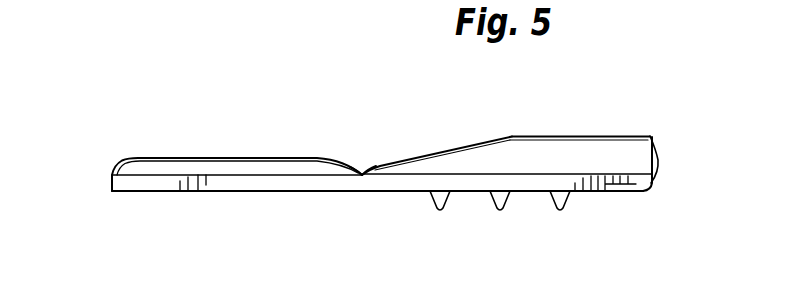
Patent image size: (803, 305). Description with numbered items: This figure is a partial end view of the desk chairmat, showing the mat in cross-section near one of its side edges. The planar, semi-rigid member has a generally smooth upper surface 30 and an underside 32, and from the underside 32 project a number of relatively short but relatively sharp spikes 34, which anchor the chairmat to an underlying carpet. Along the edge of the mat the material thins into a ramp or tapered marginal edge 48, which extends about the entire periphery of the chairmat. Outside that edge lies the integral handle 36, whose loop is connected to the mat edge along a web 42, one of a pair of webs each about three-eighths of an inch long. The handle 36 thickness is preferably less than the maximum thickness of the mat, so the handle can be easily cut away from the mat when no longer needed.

The upper surface 30 is at (577, 137).
The underside 32 is at (610, 192).
The spikes 34 is at (497, 201).
The handle 36 is at (169, 152).
The web 42 is at (362, 175).
The ramp or tapered marginal edge 48 is at (433, 155).